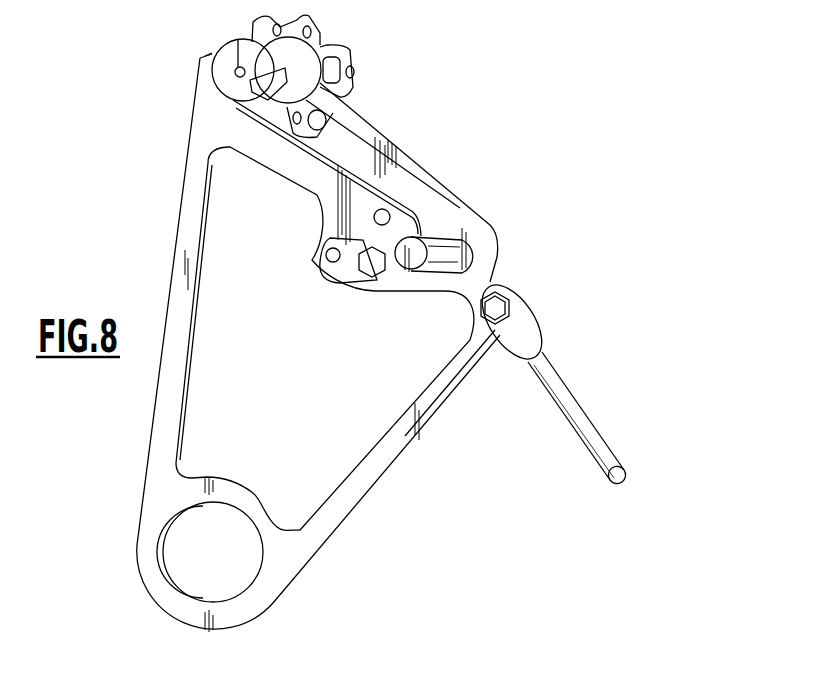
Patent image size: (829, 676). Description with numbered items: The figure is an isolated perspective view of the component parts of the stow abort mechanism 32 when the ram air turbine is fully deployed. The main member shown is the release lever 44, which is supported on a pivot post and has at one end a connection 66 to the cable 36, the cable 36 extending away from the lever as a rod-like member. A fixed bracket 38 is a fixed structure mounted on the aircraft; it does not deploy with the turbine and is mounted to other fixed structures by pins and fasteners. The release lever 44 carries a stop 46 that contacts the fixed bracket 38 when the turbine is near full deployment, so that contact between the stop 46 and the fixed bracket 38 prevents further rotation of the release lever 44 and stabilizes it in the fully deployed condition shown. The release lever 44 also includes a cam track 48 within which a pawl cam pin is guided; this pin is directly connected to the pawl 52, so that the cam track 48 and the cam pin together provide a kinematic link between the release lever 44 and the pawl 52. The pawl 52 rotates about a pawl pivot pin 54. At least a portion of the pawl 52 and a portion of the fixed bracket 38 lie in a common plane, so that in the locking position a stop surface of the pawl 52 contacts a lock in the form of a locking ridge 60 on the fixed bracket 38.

The stow abort mechanism 32 is at (622, 137).
The cable 36 is at (567, 397).
The fixed bracket 38 is at (294, 60).
The release lever 44 is at (290, 163).
The stop 46 is at (203, 48).
The cam track 48 is at (330, 260).
The pawl 52 is at (393, 170).
The pawl pivot pin 54 is at (450, 253).
The locking ridge 60 is at (230, 108).
The connection 66 is at (513, 293).